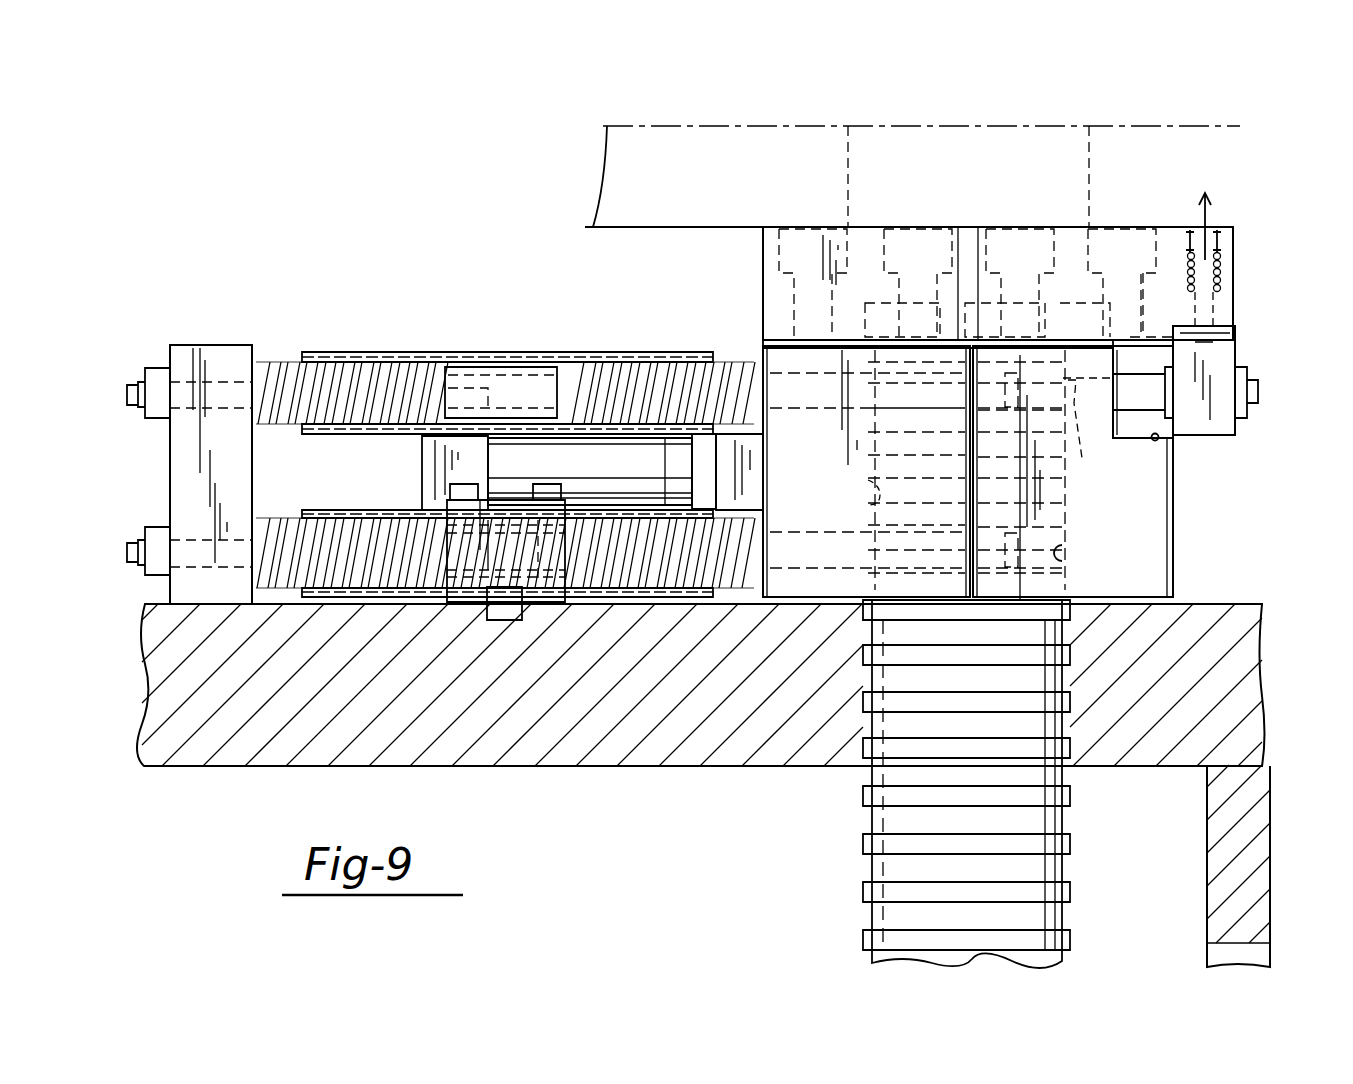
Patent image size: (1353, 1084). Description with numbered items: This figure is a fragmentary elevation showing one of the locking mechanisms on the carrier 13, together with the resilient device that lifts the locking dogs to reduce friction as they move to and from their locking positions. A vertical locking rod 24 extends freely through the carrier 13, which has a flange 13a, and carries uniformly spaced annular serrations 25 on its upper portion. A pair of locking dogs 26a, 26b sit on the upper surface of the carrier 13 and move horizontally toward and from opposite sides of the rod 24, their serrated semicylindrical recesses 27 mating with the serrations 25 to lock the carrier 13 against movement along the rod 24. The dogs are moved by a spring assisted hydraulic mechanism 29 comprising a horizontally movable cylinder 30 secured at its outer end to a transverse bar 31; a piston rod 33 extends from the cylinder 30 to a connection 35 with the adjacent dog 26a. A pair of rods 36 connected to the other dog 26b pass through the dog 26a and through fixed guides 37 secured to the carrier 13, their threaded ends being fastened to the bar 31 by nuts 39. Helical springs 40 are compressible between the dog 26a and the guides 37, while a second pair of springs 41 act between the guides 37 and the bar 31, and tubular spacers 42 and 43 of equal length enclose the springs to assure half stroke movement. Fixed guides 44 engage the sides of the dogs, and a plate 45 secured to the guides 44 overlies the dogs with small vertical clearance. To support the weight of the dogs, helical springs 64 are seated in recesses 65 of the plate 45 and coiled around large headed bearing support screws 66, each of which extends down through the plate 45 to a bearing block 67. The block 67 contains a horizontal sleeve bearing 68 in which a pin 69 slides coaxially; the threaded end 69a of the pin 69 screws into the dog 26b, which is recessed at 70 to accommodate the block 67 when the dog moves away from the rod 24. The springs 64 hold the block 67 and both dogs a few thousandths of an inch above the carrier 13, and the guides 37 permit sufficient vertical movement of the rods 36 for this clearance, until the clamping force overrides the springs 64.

The carrier 13 is at (500, 748).
The flange of the carrier 13a is at (320, 750).
The locking rod 24 is at (883, 867).
The annular grooves or serrations 25 is at (872, 820).
The locking dog 26a is at (828, 444).
The locking dog 26b is at (1150, 570).
The semicylindrical recess 27 is at (875, 483).
The spring assisted hydraulic mechanism 29 is at (514, 281).
The hydraulic cylinder 30 is at (377, 478).
The transverse bar 31 is at (210, 345).
The piston rod 33 is at (632, 478).
The connection 35 is at (752, 487).
The rods 36 is at (387, 393).
The fixed guides 37 is at (463, 592).
The nuts 39 is at (152, 358).
The helical springs 40 is at (722, 360).
The helical springs 41 is at (273, 360).
The tubular spacer 42 is at (590, 592).
The tubular spacer 43 is at (348, 592).
The fixed guides 44 is at (815, 343).
The plate 45 is at (873, 227).
The helical springs 64 is at (1222, 273).
The recesses 65 is at (1197, 230).
The bearing support screw 66 is at (1217, 228).
The bearing block 67 is at (1218, 436).
The sleeve bearing 68 is at (1187, 445).
The pin 69 is at (1133, 415).
The threaded end 69a is at (1095, 434).
The recess 70 is at (1158, 442).